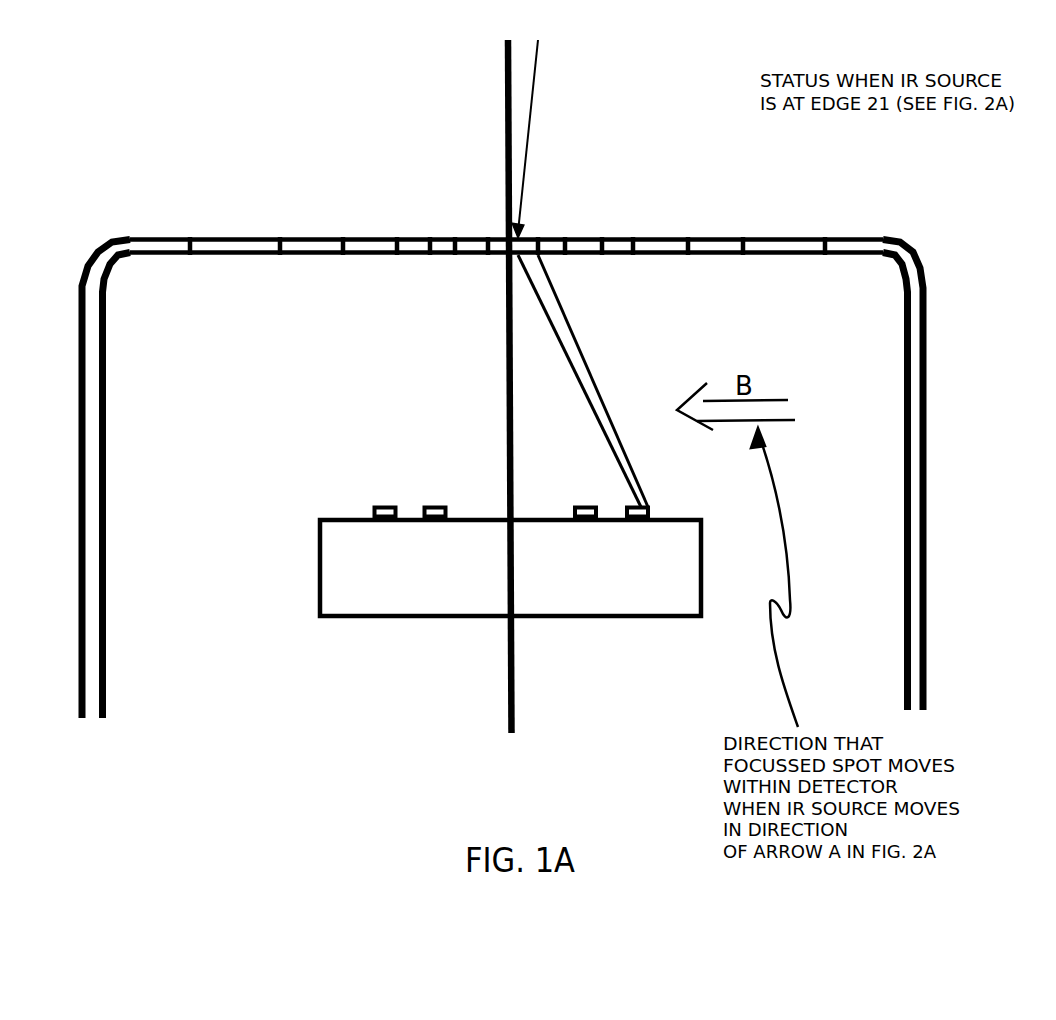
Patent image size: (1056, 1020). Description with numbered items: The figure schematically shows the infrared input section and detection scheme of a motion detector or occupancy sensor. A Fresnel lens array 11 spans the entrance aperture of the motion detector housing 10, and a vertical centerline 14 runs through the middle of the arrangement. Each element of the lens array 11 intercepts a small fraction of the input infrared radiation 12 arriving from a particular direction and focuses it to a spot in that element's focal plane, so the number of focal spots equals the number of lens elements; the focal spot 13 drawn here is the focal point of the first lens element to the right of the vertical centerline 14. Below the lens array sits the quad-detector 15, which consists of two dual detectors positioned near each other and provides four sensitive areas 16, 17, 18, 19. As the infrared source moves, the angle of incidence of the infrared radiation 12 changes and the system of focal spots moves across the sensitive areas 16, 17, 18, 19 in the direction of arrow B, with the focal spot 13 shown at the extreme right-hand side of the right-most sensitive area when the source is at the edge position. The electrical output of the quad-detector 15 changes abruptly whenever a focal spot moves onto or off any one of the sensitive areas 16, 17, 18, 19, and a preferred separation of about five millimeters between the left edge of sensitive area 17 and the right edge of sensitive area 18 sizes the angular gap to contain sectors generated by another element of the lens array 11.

The motion detector housing 10 is at (928, 442).
The Fresnel lens array 11 is at (213, 232).
The input infrared radiation 12 is at (537, 96).
The focal spot 13 is at (642, 483).
The vertical centerline 14 is at (518, 681).
The quad-detector 15 is at (447, 586).
The sensitive area 16 is at (628, 500).
The sensitive area 17 is at (579, 503).
The sensitive area 18 is at (430, 506).
The sensitive area 19 is at (388, 506).